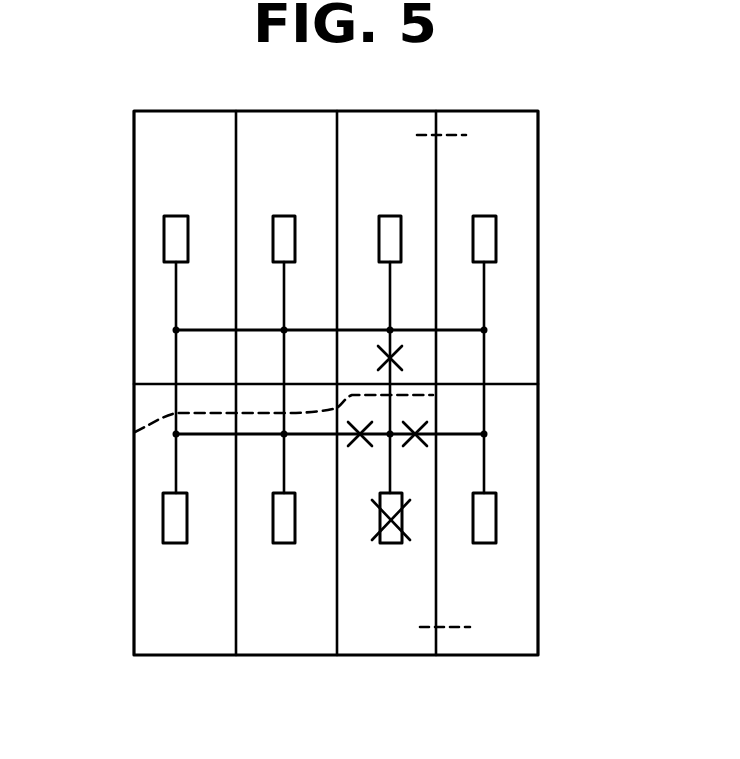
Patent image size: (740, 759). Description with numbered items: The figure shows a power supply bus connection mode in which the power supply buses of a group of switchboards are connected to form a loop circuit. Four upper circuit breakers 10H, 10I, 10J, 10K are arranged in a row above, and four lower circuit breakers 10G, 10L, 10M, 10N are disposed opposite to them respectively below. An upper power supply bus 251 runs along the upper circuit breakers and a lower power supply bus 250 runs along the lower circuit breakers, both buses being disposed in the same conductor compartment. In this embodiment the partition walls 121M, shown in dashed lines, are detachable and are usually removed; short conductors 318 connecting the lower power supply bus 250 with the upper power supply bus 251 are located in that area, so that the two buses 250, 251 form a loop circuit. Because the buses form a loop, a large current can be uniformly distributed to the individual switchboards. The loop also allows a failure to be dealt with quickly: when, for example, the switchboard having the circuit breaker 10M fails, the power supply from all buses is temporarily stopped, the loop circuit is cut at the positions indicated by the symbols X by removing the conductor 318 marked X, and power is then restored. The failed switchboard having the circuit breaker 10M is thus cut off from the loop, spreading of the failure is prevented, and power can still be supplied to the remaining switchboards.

The upper circuit breaker 10H is at (176, 216).
The upper circuit breaker 10I is at (284, 216).
The upper circuit breaker 10J is at (390, 216).
The upper circuit breaker 10K is at (484, 216).
The lower circuit breaker 10G is at (176, 543).
The lower circuit breaker 10L is at (284, 543).
The lower circuit breaker 10M is at (390, 543).
The lower circuit breaker 10N is at (484, 543).
The upper power supply bus 251 is at (458, 330).
The lower power supply bus 250 is at (458, 436).
The short conductor 318 is at (177, 348).
The partition wall 121M is at (135, 432).